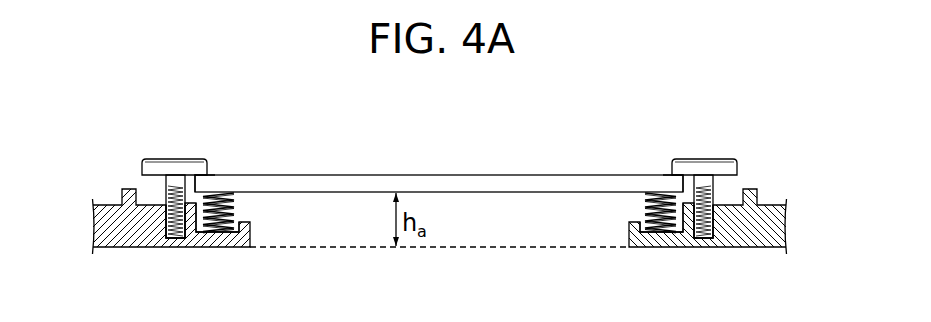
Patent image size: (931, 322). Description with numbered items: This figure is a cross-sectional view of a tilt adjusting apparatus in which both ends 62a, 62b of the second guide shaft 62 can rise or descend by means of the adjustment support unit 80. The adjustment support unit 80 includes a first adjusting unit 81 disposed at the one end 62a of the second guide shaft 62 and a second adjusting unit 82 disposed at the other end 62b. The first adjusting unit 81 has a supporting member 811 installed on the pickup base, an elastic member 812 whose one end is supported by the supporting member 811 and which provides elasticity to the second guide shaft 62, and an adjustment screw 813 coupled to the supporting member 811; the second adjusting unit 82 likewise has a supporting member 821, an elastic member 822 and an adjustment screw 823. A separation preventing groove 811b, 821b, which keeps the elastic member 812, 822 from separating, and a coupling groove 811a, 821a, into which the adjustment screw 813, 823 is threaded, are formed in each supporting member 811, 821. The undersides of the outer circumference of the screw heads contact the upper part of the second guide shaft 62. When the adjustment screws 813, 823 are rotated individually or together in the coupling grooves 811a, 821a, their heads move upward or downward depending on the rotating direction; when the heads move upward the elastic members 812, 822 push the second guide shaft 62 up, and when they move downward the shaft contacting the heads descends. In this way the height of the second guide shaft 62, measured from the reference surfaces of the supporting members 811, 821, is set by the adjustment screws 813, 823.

The second guide shaft 62 is at (438, 168).
The one end of the second guide shaft 62a is at (203, 178).
The other end of the second guide shaft 62b is at (675, 178).
The adjustment support unit 80 is at (441, 194).
The first adjusting unit 81 is at (175, 194).
The supporting member 811 is at (117, 248).
The coupling groove 811a is at (176, 248).
The separation preventing groove 811b is at (232, 248).
The elastic member 812 is at (236, 209).
The adjustment screw 813 is at (170, 172).
The second adjusting unit 82 is at (705, 194).
The supporting member 821 is at (755, 248).
The coupling groove 821a is at (707, 248).
The separation preventing groove 821b is at (650, 248).
The elastic member 822 is at (648, 208).
The adjustment screw 823 is at (707, 172).